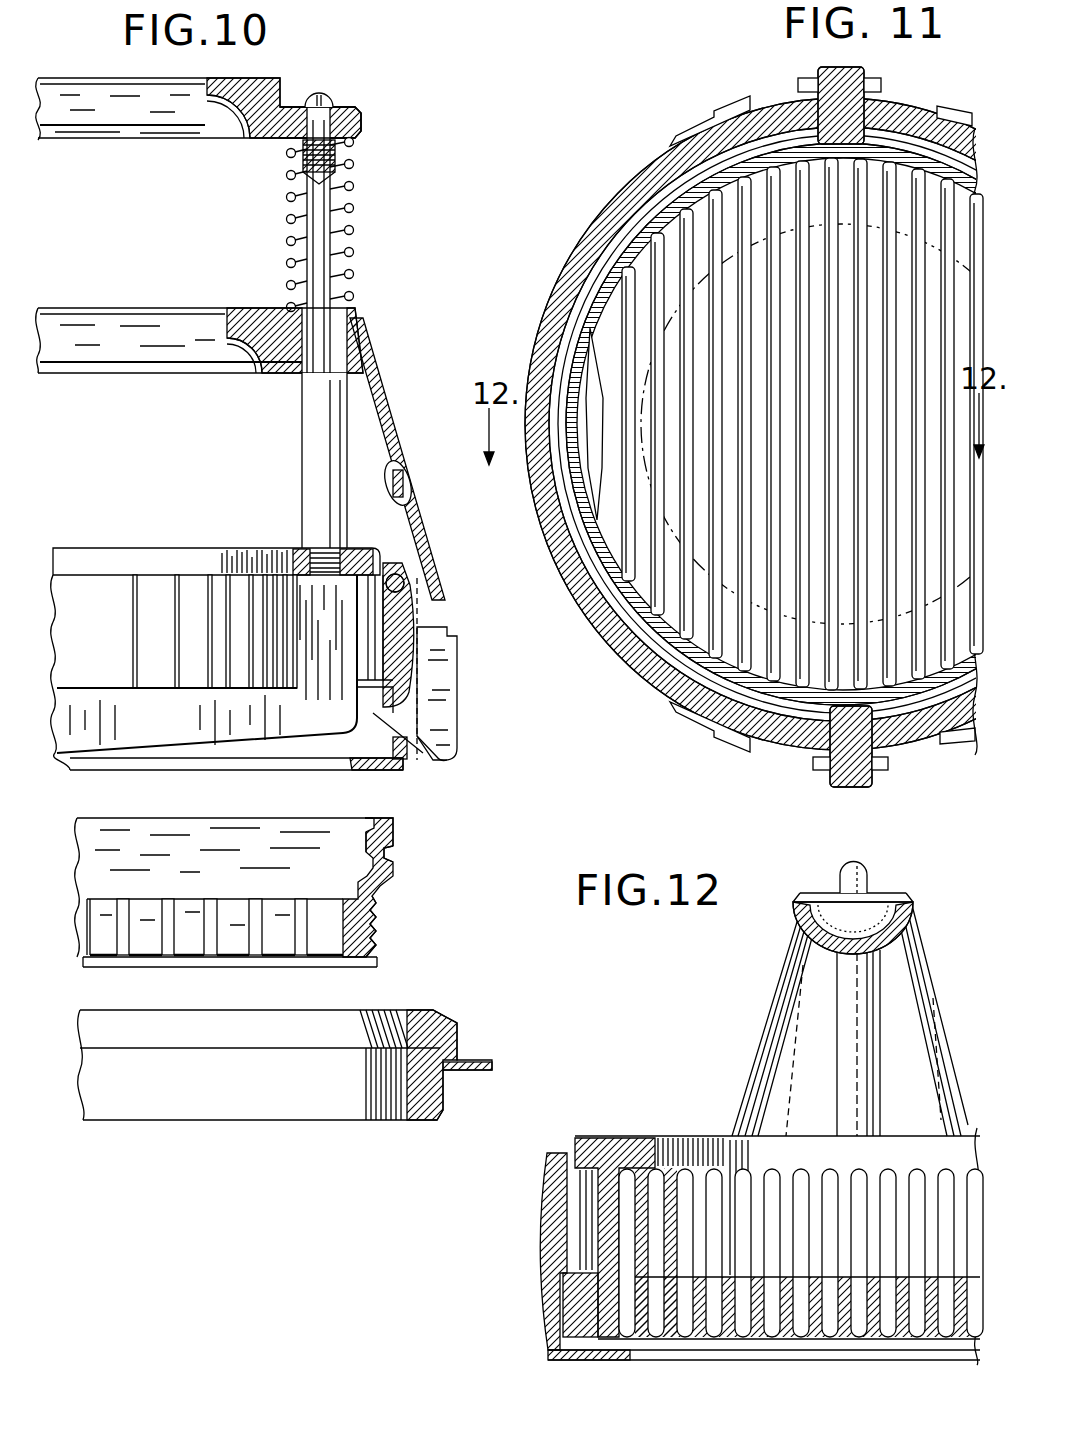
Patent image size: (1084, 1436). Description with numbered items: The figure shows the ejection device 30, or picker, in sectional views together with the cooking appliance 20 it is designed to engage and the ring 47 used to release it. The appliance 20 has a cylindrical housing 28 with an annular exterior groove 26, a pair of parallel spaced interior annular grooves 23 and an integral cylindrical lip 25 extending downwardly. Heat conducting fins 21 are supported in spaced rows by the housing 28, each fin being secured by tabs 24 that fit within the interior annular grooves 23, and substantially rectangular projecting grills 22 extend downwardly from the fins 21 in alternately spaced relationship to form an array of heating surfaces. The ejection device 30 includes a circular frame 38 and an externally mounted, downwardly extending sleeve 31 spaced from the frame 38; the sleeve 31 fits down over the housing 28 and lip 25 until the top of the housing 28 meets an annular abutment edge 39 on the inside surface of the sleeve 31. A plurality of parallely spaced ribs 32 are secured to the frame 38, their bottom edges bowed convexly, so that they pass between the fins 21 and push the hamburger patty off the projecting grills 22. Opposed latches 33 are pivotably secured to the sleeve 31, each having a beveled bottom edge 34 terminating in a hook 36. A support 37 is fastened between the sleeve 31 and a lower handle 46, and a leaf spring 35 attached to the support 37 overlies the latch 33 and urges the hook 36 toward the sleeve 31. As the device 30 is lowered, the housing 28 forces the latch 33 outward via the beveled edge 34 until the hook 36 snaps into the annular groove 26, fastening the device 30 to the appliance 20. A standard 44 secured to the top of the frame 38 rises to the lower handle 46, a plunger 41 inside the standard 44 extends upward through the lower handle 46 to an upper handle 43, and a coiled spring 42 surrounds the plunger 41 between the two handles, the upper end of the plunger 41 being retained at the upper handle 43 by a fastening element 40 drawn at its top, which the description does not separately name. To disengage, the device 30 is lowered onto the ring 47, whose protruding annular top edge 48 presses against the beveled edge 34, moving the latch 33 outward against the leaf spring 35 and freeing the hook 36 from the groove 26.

In FIG. 10, the appliance 20 is at (410, 836).
In FIG. 10, the heat conducting fins 21 is at (195, 862).
In FIG. 10, the projecting grills 22 is at (270, 945).
In FIG. 10, the interior annular grooves 23 is at (395, 871).
In FIG. 10, the tabs 24 is at (368, 835).
In FIG. 10, the cylindrical lip 25 is at (376, 925).
In FIG. 10, the annular exterior groove 26 is at (392, 856).
In FIG. 10, the cylindrical housing 28 is at (380, 822).
In FIG. 10, the ejection device 30 is at (154, 540).
In FIG. 11, the ejection device 30 is at (592, 203).
In FIG. 12, the ejection device 30 is at (622, 1128).
In FIG. 10, the sleeve 31 is at (402, 640).
In FIG. 11, the sleeve 31 is at (546, 522).
In FIG. 12, the sleeve 31 is at (550, 1216).
In FIG. 10, the ribs 32 is at (247, 735).
In FIG. 11, the ribs 32 is at (686, 632).
In FIG. 12, the ribs 32 is at (820, 1338).
In FIG. 10, the latches 33 is at (440, 713).
In FIG. 11, the latches 33 is at (858, 72).
In FIG. 10, the beveled bottom edge 34 is at (425, 752).
In FIG. 10, the leaf spring 35 is at (400, 575).
In FIG. 11, the leaf spring 35 is at (806, 82).
In FIG. 10, the hook 36 is at (338, 752).
In FIG. 10, the support 37 is at (382, 428).
In FIG. 11, the support 37 is at (693, 128).
In FIG. 12, the support 37 is at (800, 997).
In FIG. 10, the circular frame 38 is at (335, 670).
In FIG. 11, the circular frame 38 is at (606, 560).
In FIG. 12, the circular frame 38 is at (606, 1158).
In FIG. 12, the annular abutment edge 39 is at (572, 1290).
In FIG. 10, the nut 40 is at (357, 110).
In FIG. 10, the plunger 41 is at (332, 246).
In FIG. 12, the plunger 41 is at (846, 877).
In FIG. 10, the spring 42 is at (352, 206).
In FIG. 10, the upper handle 43 is at (158, 140).
In FIG. 12, the upper handle 43 is at (820, 944).
In FIG. 10, the standard 44 is at (317, 450).
In FIG. 12, the standard 44 is at (847, 1050).
In FIG. 10, the lower handle 46 is at (137, 315).
In FIG. 10, the ring 47 is at (390, 1004).
In FIG. 10, the protruding annular top edge 48 is at (433, 1012).